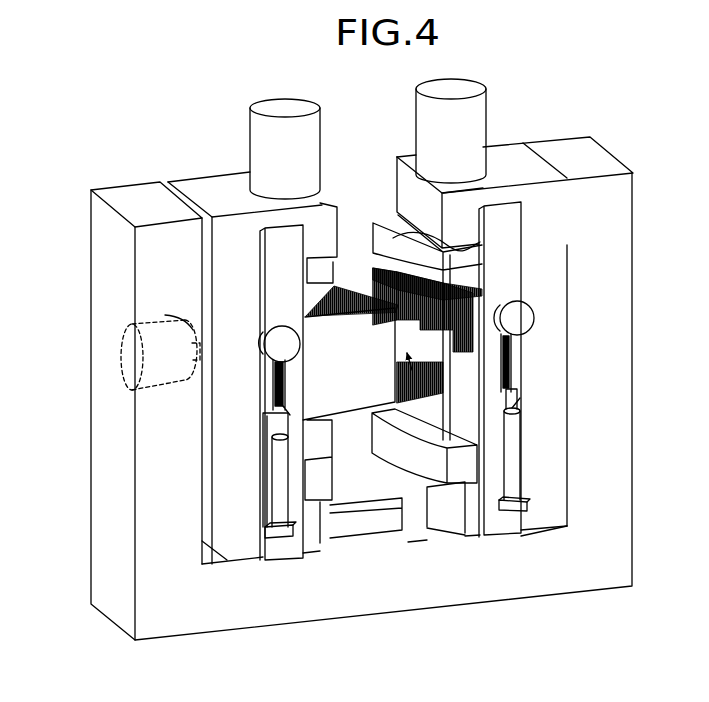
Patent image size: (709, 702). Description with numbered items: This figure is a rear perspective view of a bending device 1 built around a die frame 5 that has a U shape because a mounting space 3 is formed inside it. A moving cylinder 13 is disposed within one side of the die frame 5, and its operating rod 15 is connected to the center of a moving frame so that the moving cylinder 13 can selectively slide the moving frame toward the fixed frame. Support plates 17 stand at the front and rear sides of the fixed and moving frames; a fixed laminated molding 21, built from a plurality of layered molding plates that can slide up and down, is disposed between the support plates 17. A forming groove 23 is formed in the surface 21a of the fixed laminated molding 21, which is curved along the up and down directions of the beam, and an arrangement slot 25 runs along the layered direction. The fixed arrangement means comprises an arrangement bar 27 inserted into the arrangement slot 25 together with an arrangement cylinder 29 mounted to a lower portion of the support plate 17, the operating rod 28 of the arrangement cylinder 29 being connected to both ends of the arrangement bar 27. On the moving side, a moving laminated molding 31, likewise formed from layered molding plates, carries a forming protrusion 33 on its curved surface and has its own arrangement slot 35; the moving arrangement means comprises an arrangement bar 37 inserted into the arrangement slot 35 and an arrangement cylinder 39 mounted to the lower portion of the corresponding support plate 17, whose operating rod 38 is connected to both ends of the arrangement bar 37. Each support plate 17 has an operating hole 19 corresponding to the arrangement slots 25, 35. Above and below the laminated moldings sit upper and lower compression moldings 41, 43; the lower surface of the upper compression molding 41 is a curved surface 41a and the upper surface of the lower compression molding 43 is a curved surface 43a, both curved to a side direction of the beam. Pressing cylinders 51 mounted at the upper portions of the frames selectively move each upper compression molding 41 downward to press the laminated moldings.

The bending device 1 is at (622, 131).
The mounting space 3 is at (388, 196).
The die frame 5 is at (556, 562).
The moving cylinder 13 is at (145, 343).
The operating rod 15 is at (165, 315).
The support plate 17 is at (277, 245).
The operating hole 19 is at (264, 390).
The fixed laminated molding 21 is at (468, 321).
The surface of the fixed laminated molding 21a is at (445, 295).
The forming groove 23 is at (518, 415).
The arrangement slot 25 is at (512, 390).
The arrangement bar 27 is at (534, 303).
The operating rod 28 is at (520, 398).
The arrangement cylinder 29 is at (521, 483).
The moving laminated molding 31 is at (352, 291).
The forming protrusion 33 is at (282, 478).
The arrangement slot 35 is at (287, 413).
The arrangement bar 37 is at (287, 347).
The operating rod 38 is at (283, 400).
The arrangement cylinder 39 is at (202, 541).
The upper compression molding 41 is at (373, 223).
The curved surface 41a is at (402, 250).
The lower compression molding 43 is at (427, 455).
The curved surface 43a is at (397, 396).
The pressing cylinder 51 is at (288, 105).